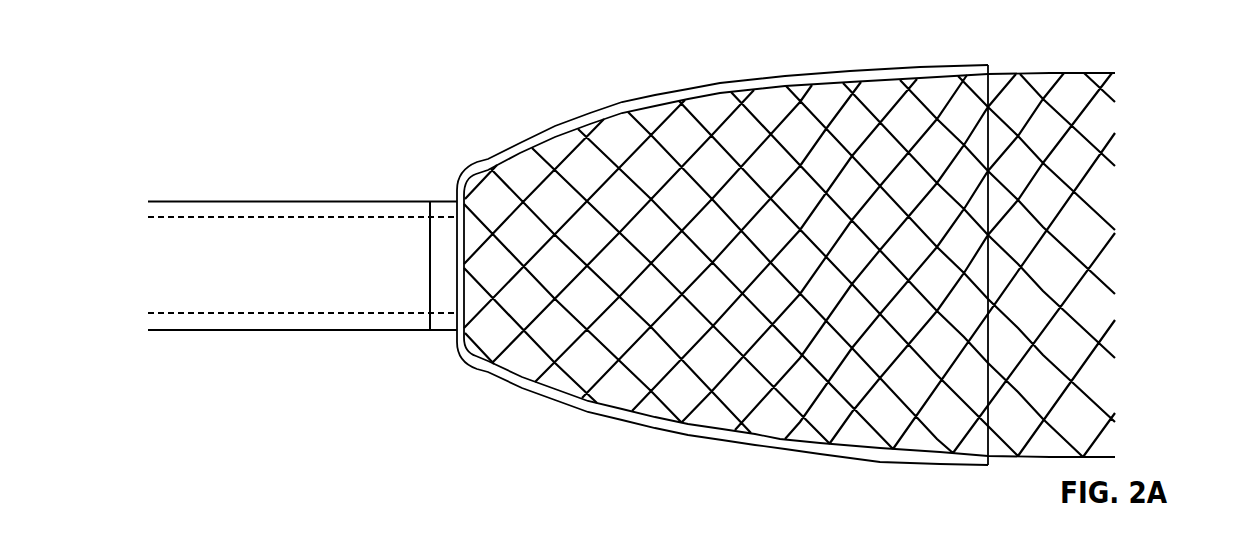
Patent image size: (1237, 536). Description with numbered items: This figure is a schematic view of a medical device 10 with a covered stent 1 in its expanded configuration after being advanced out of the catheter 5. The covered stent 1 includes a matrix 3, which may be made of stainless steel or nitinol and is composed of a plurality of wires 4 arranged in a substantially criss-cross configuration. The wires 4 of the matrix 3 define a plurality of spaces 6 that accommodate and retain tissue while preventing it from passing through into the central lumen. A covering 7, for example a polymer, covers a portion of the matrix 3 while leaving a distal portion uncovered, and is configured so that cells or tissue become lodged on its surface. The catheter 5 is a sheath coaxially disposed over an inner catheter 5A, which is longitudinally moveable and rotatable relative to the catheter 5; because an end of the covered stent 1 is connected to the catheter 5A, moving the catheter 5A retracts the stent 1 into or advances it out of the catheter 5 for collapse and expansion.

The covered stent 1 is at (836, 250).
The matrix 3 is at (722, 250).
The wires 4 is at (722, 250).
The catheter 5 is at (302, 260).
The catheter 5A is at (307, 315).
The spaces 6 is at (796, 135).
The covering 7 is at (708, 87).
The medical device 10 is at (836, 250).